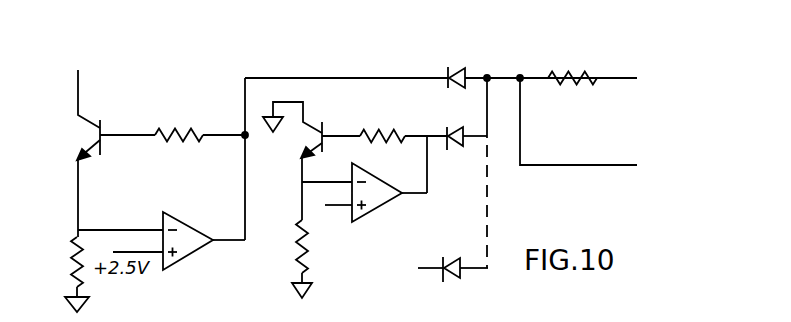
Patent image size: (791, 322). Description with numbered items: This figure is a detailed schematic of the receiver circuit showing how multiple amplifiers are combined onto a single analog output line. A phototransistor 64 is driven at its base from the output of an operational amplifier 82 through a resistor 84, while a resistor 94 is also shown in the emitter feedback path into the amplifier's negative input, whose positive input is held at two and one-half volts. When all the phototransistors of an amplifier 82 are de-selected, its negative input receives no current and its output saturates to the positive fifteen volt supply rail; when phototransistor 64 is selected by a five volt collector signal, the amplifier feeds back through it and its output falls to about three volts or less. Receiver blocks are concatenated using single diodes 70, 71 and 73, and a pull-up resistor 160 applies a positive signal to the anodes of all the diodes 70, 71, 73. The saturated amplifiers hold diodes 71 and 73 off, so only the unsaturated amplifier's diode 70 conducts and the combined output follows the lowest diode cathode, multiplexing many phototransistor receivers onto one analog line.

The phototransistor 64 is at (108, 122).
The resistor 84 is at (190, 126).
The operational amplifier 82 is at (187, 228).
The resistor 94 is at (70, 257).
The diode 70 is at (466, 70).
The diode 71 is at (455, 150).
The diode 73 is at (449, 259).
The pull-up resistor 160 is at (574, 73).